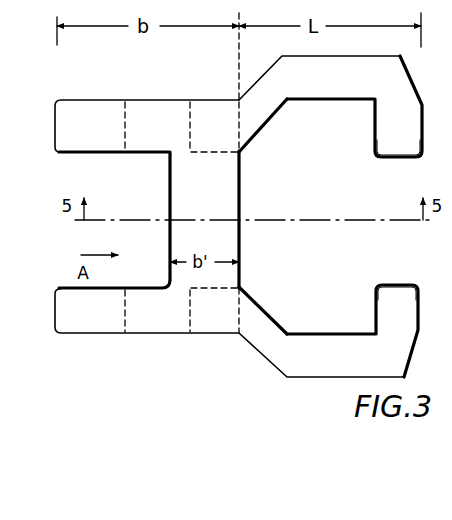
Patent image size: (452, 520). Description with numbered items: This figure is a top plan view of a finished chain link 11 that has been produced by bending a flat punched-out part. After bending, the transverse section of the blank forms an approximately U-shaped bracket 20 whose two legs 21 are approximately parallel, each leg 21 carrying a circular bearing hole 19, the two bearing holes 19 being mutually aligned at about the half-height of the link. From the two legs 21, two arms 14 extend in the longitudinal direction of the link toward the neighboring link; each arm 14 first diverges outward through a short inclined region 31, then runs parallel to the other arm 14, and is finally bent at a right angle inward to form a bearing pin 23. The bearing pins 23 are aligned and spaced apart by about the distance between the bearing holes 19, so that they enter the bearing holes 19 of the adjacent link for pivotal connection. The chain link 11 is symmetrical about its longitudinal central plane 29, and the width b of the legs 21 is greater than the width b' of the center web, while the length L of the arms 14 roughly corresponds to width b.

The chain link 11 is at (135, 98).
The arm 14 is at (273, 64).
The bearing hole 19 is at (126, 122).
The bracket 20 is at (244, 203).
The leg 21 is at (112, 150).
The bearing pin 23 is at (377, 133).
The longitudinal central plane 29 is at (390, 223).
The short inclined region 31 is at (262, 117).